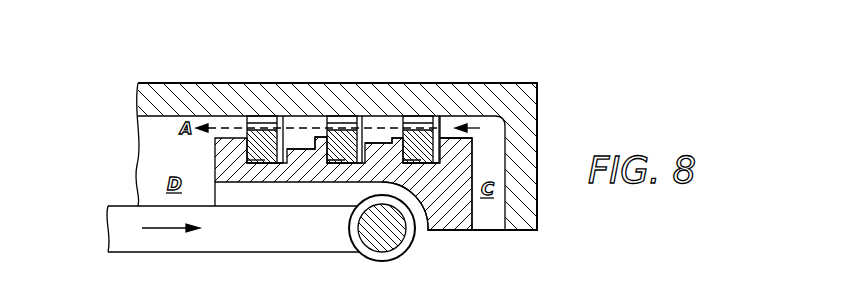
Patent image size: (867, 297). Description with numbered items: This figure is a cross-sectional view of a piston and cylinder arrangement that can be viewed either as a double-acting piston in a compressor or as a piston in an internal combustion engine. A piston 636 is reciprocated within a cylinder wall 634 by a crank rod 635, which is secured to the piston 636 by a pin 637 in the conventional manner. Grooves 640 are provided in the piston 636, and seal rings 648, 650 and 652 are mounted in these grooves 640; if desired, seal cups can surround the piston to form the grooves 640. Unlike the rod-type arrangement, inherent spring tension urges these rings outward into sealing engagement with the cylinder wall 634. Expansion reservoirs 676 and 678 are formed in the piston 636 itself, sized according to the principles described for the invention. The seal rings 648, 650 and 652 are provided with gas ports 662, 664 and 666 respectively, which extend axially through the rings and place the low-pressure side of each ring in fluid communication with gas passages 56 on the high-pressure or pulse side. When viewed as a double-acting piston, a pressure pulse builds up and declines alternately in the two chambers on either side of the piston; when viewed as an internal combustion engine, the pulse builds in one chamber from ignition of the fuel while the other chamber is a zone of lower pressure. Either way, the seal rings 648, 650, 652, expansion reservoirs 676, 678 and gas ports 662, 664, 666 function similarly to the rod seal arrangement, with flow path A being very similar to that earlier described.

The cylinder wall 634 is at (172, 83).
The gas port 666 is at (267, 127).
The seal ring 652 is at (262, 128).
The expansion reservoir 678 is at (300, 128).
The gas port 664 is at (334, 128).
The seal ring 650 is at (392, 124).
The expansion reservoir 676 is at (422, 120).
The seal ring 648 is at (438, 117).
The gas port 662 is at (458, 117).
The gas passage 56 is at (437, 145).
The groove 640 is at (338, 165).
The crank rod 635 is at (207, 240).
The pin 637 is at (377, 245).
The piston 636 is at (445, 218).